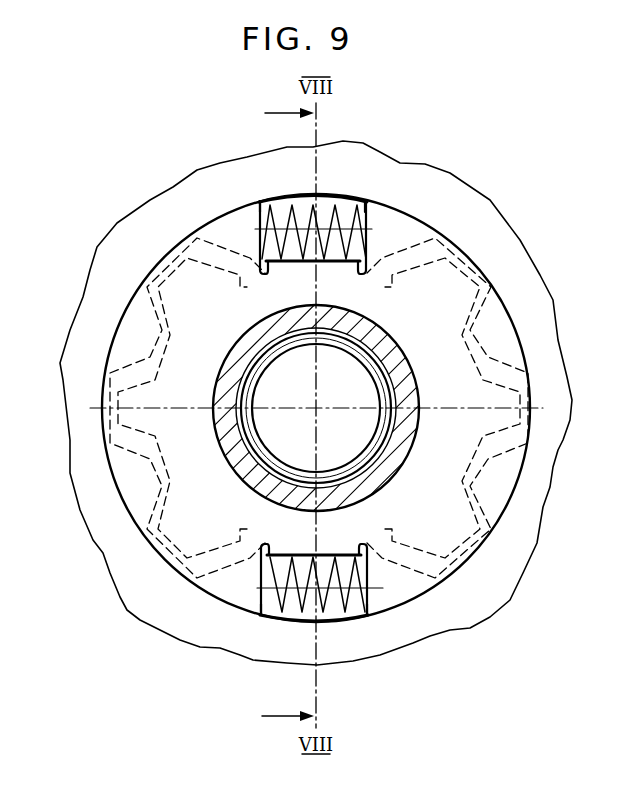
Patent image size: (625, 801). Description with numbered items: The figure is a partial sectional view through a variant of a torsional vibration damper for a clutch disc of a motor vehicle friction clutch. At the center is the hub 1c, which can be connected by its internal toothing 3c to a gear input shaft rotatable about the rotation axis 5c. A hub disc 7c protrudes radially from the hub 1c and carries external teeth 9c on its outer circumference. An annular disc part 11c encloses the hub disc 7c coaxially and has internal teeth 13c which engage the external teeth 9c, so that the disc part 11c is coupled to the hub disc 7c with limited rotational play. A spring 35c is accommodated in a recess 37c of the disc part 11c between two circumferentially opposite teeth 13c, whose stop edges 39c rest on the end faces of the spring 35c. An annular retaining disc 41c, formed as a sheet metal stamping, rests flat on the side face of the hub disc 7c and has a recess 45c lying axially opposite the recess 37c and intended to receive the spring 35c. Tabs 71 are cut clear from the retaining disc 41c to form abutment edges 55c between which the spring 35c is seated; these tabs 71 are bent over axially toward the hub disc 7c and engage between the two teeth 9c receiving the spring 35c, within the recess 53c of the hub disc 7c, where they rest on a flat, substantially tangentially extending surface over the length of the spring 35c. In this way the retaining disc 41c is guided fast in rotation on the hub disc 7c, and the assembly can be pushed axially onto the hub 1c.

The hub 1c is at (226, 390).
The internal toothing 3c is at (270, 352).
The rotation axis 5c is at (320, 404).
The hub disc 7c is at (460, 458).
The teeth 9c is at (173, 273).
The disc part 11c is at (520, 265).
The teeth 13c is at (257, 257).
The spring 35c is at (322, 203).
The recess 37c is at (300, 200).
The stop edges 39c is at (262, 200).
The retaining disc 41c is at (123, 473).
The recess 45c is at (347, 232).
The recess 53c is at (355, 270).
The abutment edges 55c is at (258, 212).
The tabs 71 is at (272, 268).